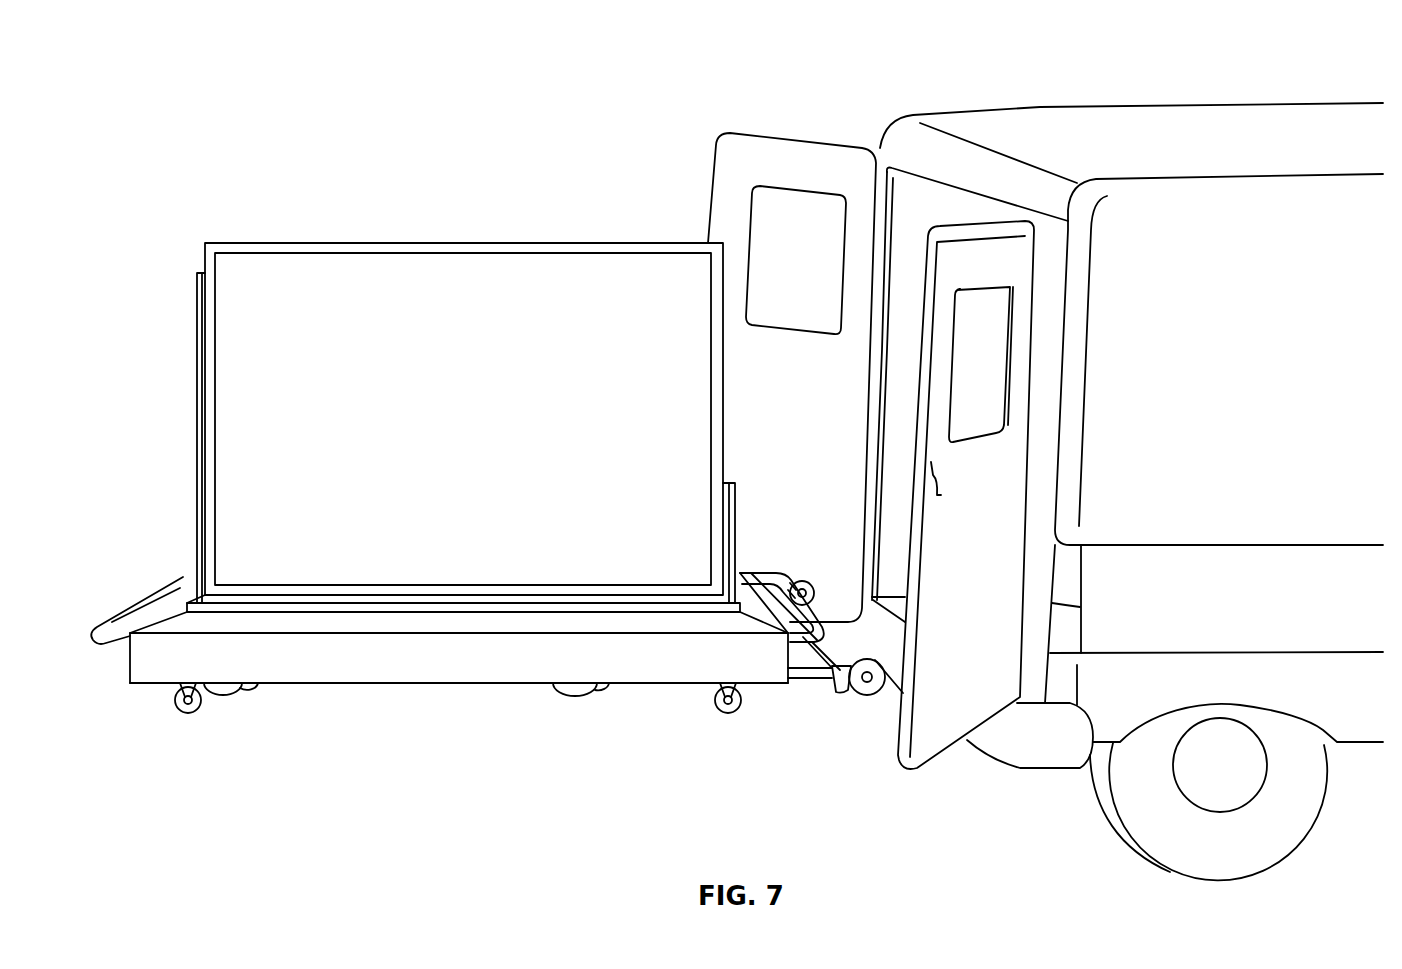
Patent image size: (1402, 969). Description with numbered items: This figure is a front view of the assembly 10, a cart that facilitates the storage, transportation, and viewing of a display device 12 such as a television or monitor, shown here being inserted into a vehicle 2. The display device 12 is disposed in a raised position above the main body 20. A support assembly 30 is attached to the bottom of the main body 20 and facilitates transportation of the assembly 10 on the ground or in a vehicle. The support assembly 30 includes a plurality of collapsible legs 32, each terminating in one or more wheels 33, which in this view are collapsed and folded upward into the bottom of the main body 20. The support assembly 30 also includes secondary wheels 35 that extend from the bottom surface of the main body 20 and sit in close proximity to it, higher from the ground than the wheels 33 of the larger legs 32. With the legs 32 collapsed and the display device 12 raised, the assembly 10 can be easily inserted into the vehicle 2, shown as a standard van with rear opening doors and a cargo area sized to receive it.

The vehicle 2 is at (1046, 128).
The assembly 10 is at (483, 210).
The display device 12 is at (290, 298).
The main body 20 is at (170, 661).
The support assembly 30 is at (452, 700).
The collapsible legs 32 is at (252, 688).
The wheels 33 is at (222, 691).
The secondary wheels 35 is at (182, 713).